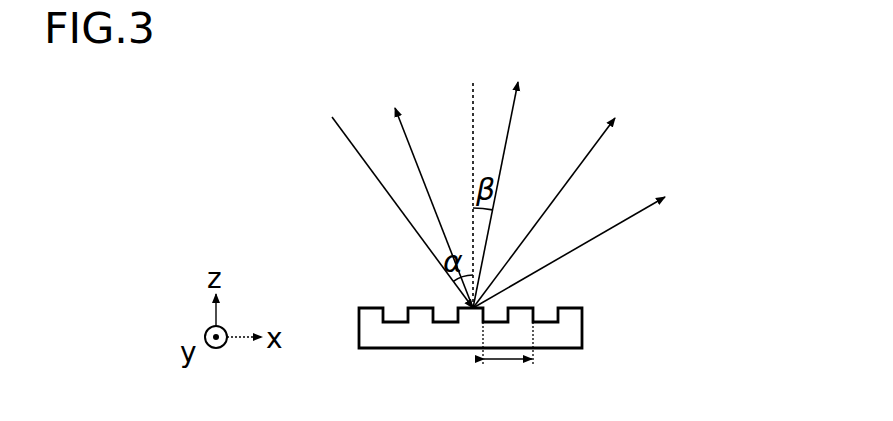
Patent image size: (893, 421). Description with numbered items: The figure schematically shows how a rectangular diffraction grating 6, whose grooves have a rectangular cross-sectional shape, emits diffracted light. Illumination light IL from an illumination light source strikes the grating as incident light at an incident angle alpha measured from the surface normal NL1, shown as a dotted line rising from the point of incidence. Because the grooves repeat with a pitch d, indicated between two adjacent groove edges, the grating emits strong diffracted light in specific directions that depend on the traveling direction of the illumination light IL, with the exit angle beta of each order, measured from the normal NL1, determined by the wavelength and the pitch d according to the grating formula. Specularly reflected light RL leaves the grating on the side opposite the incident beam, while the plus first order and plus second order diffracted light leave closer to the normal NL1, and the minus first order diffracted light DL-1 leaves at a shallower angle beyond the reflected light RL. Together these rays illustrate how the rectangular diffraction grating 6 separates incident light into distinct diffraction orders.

The rectangular diffraction grating 6 is at (402, 343).
The illumination light IL is at (379, 197).
The normal line NL1 is at (476, 166).
The −1st order diffracted light DL-1 is at (626, 239).
The specularly reflected light RL is at (576, 195).
The pitch of diffraction grating d is at (508, 351).